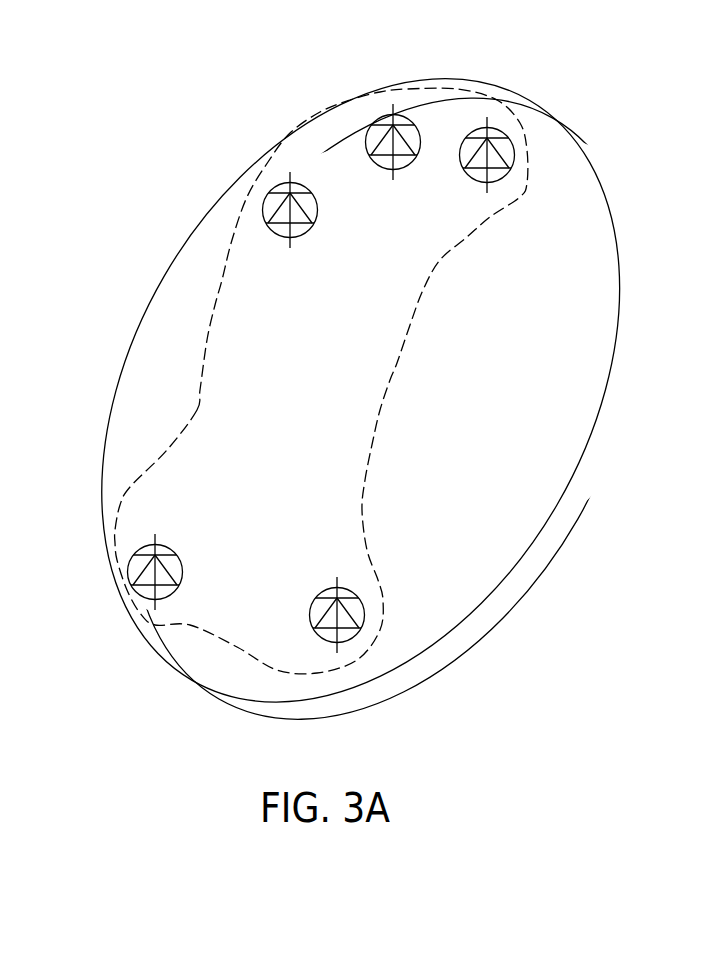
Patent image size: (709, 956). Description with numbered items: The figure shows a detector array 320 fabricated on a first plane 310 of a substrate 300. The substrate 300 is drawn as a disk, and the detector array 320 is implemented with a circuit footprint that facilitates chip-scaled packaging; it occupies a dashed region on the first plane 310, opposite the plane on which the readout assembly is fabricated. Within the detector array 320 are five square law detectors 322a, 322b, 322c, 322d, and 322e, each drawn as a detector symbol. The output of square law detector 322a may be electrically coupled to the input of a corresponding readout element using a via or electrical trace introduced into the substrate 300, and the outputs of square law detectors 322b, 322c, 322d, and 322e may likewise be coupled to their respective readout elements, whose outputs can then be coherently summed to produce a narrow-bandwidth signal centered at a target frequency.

The substrate 300 is at (354, 404).
The first plane 310 is at (572, 273).
The detector array 320 is at (393, 383).
The square law detector 322a is at (332, 590).
The square law detector 322b is at (183, 572).
The square law detector 322c is at (317, 207).
The square law detector 322d is at (382, 115).
The square law detector 322e is at (492, 128).